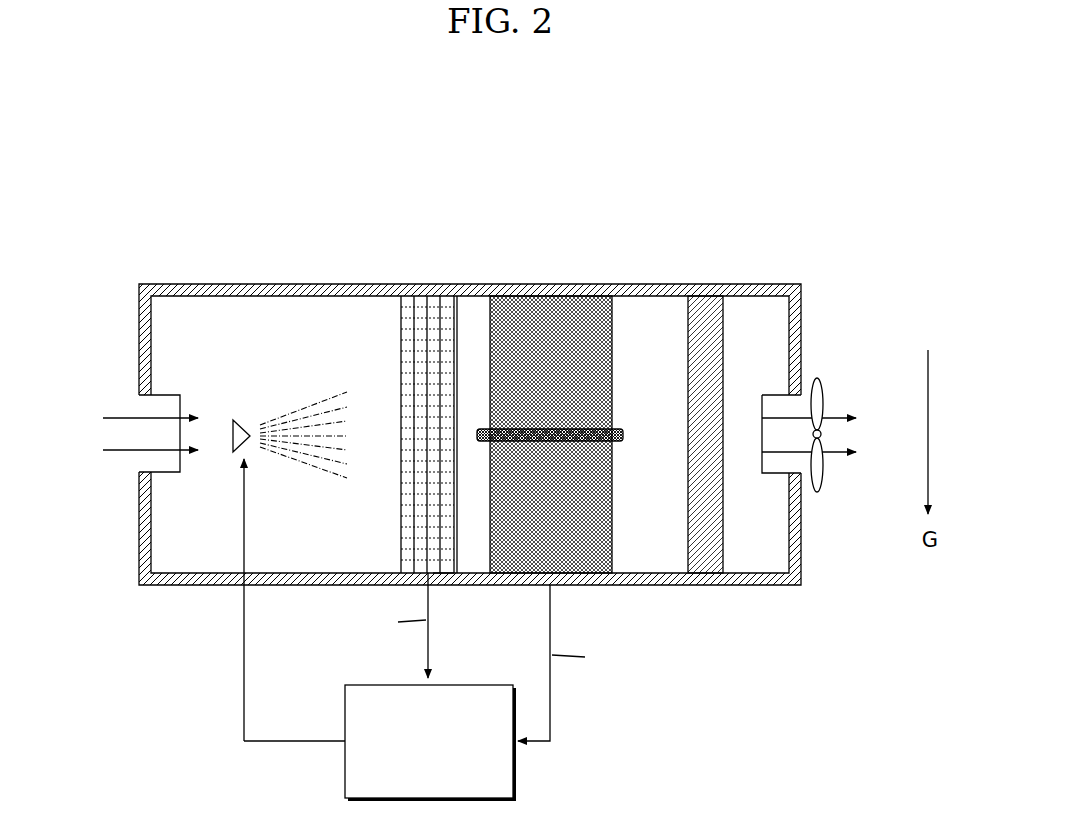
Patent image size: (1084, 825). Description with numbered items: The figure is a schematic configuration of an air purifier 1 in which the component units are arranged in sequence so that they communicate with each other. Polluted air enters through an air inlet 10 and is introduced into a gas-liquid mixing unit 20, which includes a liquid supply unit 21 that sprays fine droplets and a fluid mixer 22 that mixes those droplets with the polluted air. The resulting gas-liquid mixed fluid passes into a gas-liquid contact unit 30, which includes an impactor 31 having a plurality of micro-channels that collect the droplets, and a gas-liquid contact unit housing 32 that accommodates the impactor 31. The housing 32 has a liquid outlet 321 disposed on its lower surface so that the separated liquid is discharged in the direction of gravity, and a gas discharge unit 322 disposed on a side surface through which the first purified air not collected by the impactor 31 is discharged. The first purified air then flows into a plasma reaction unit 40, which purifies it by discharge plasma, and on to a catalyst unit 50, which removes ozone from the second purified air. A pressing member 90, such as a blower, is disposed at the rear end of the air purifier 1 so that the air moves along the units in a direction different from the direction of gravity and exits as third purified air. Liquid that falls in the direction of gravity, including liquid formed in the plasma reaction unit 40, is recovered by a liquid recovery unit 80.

The air purifier 1 is at (678, 129).
The air inlet 10 is at (133, 407).
The gas-liquid mixing unit 20 is at (256, 458).
The liquid supply unit 21 is at (233, 420).
The fluid mixer 22 is at (284, 312).
The gas-liquid contact unit 30 is at (408, 426).
The impactor 31 is at (415, 316).
The gas-liquid contact unit housing 32 is at (396, 591).
The liquid outlet 321 is at (433, 573).
The gas discharge unit 322 is at (458, 300).
The plasma reaction unit 40 is at (551, 268).
The catalyst unit 50 is at (707, 268).
The liquid recovery unit 80 is at (345, 705).
The pressing member 90 is at (818, 378).